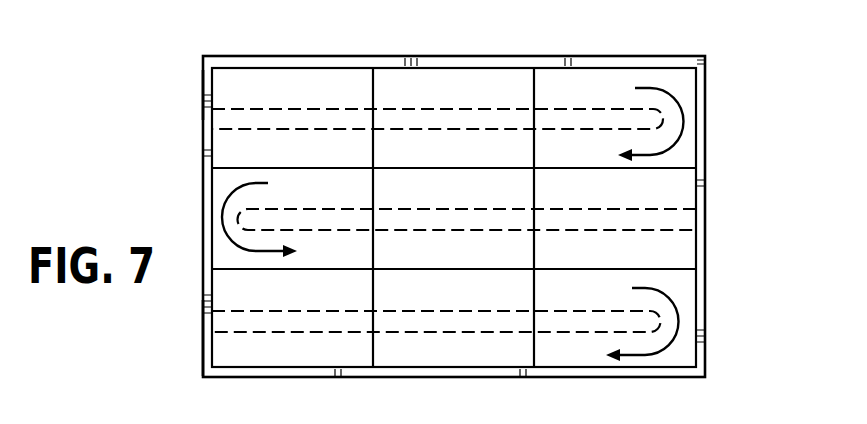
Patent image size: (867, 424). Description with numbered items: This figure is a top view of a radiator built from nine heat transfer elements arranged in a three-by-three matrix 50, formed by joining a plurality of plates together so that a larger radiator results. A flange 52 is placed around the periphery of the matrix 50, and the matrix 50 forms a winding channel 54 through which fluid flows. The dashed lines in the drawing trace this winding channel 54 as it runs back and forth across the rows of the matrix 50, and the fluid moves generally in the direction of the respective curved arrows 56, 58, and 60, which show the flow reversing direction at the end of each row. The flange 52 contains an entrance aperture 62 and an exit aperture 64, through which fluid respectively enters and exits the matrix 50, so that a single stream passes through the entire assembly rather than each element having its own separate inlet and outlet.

The matrix 50 is at (484, 78).
The flange 52 is at (288, 56).
The winding channel 54 is at (333, 94).
The curved arrow 56 is at (686, 123).
The curved arrow 58 is at (222, 200).
The curved arrow 60 is at (680, 316).
The entrance aperture 62 is at (200, 88).
The exit aperture 64 is at (200, 347).